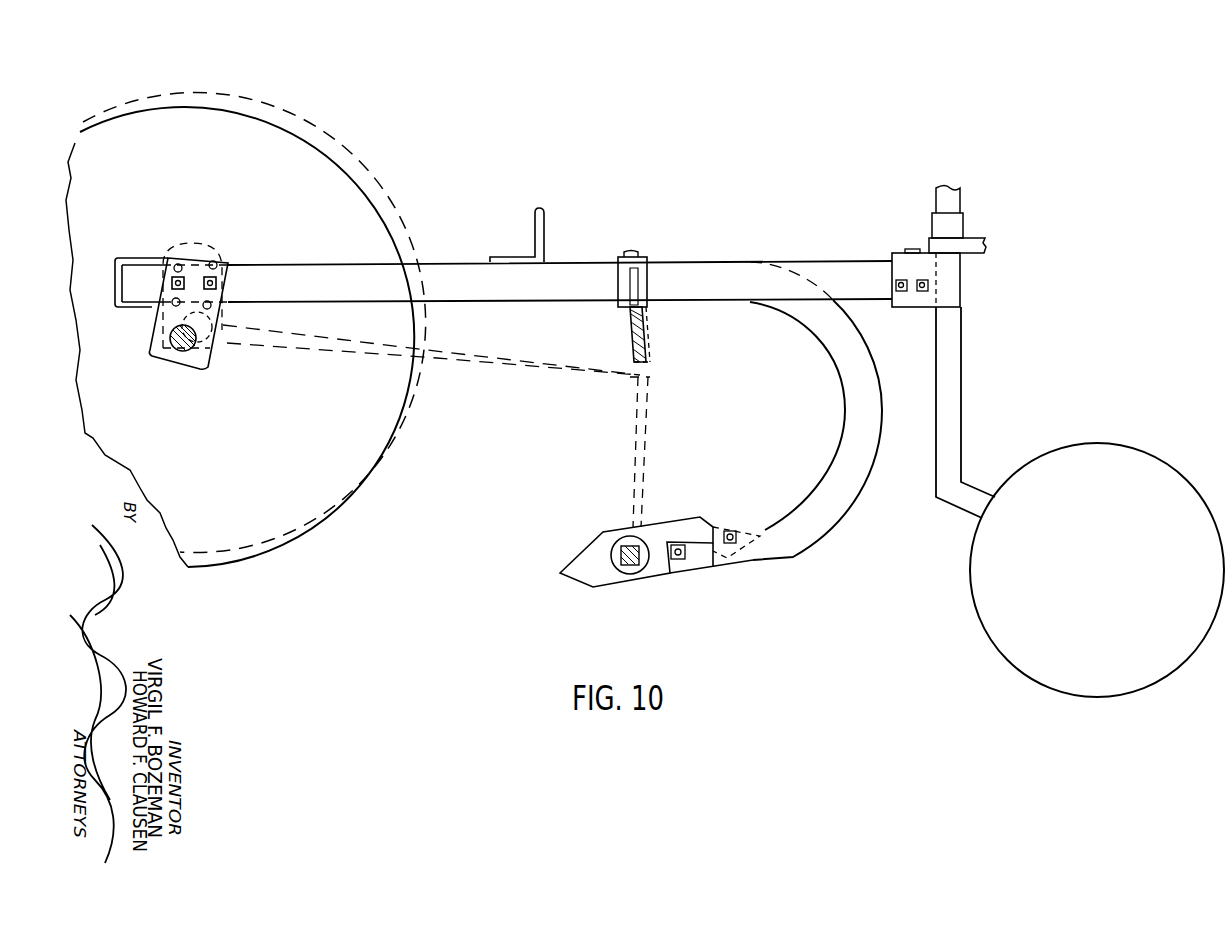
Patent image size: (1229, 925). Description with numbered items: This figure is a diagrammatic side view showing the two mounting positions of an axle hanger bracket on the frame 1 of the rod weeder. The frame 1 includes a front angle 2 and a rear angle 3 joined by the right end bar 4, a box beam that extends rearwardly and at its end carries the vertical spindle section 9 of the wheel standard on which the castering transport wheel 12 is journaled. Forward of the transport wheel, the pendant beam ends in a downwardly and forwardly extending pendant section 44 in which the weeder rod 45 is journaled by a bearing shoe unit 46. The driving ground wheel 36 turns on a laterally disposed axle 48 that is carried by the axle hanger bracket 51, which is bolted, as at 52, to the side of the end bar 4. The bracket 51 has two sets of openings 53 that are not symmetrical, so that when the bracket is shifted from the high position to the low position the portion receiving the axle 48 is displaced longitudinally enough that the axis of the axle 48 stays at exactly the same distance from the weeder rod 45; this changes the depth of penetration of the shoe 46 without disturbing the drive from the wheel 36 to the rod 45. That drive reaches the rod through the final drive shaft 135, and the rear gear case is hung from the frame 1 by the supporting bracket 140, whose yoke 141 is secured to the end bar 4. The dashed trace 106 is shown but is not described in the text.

The frame 1 is at (527, 251).
The front angle 2 is at (133, 258).
The rear angle 3 is at (544, 240).
The right end bar 4 is at (340, 272).
The vertical spindle section 9 is at (962, 405).
The transport wheel 12 is at (1102, 443).
The ground wheel 36 is at (375, 203).
The pendant section 44 is at (853, 423).
The weeder rod 45 is at (623, 567).
The weeder rod bearing shoe unit 46 is at (593, 557).
The axle 48 is at (186, 352).
The axle hanger bracket 51 is at (157, 348).
The bolt 52 is at (182, 282).
The openings 53 is at (203, 306).
The trace line 106 is at (444, 390).
The final drive shaft 135 is at (636, 463).
The supporting bracket 140 is at (622, 322).
The yoke 141 is at (641, 270).